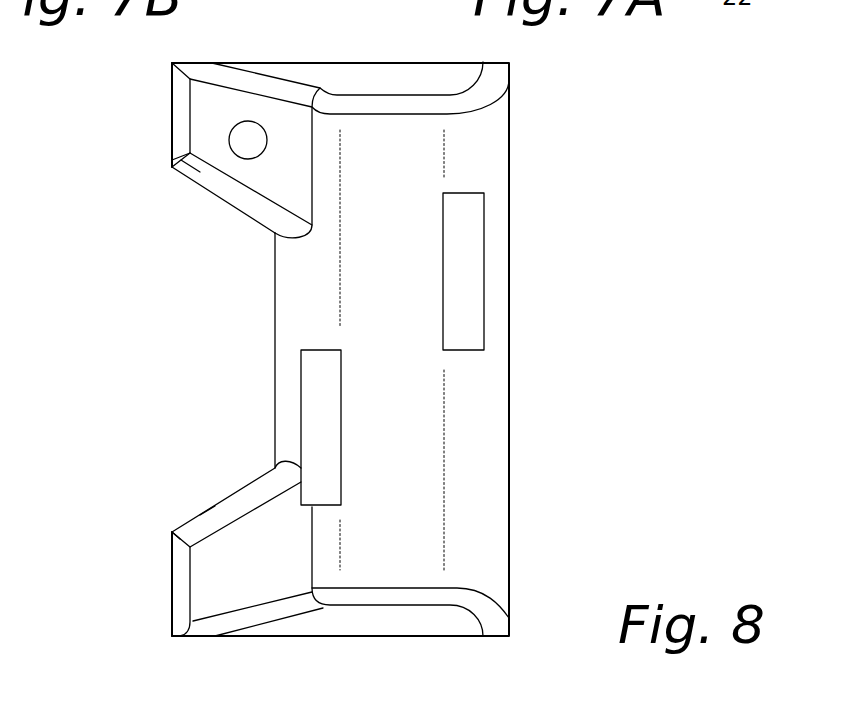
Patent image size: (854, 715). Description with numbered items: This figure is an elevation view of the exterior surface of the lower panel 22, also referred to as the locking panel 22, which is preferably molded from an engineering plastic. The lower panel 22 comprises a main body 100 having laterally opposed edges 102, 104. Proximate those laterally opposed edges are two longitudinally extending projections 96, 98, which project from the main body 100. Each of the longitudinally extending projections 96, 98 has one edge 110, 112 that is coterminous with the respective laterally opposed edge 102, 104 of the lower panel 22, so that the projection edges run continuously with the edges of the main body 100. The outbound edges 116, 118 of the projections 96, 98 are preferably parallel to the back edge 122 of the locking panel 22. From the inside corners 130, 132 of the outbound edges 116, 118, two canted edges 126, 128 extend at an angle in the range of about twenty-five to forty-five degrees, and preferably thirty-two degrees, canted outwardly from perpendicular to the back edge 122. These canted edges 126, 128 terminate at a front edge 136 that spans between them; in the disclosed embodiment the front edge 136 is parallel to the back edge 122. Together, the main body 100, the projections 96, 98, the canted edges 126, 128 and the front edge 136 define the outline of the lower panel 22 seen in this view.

The lower panel 22 is at (509, 518).
The longitudinally extending projection 96 is at (177, 637).
The longitudinally extending projection 98 is at (171, 80).
The main body 100 is at (509, 438).
The laterally opposed edge 102 is at (432, 638).
The laterally opposed edge 104 is at (397, 63).
The edge of longitudinally extending projection 110 is at (222, 638).
The edge of longitudinally extending projection 112 is at (236, 72).
The outbound edge 116 is at (173, 593).
The outbound edge 118 is at (172, 105).
The back edge 122 is at (509, 208).
The canted edge 126 is at (205, 510).
The canted edge 128 is at (200, 183).
The inside corner 130 is at (173, 528).
The inside corner 132 is at (173, 167).
The front edge 136 is at (275, 342).